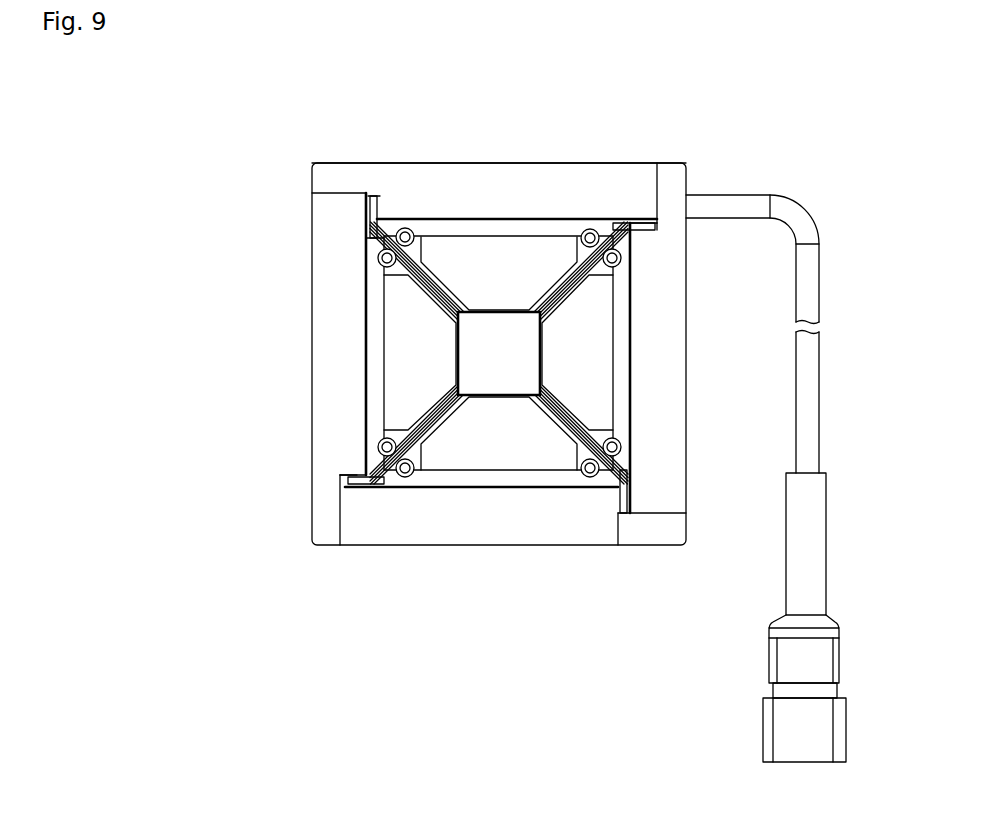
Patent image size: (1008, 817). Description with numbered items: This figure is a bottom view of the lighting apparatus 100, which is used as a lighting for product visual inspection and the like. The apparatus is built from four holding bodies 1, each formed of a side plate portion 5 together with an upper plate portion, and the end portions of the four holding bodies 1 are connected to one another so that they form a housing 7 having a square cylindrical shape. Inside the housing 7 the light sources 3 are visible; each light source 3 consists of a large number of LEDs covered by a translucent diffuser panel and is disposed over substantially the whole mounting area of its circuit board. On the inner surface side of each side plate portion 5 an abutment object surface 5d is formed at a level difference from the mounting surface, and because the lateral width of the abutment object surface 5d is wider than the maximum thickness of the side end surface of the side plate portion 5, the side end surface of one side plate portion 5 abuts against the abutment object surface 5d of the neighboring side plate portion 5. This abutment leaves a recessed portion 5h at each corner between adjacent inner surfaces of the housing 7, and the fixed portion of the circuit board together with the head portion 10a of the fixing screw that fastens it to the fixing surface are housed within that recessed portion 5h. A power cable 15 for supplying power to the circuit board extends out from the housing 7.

The lighting apparatus 100 is at (728, 138).
The holding body 1 is at (357, 163).
The light source 3 is at (552, 262).
The side plate portion 5 is at (510, 176).
The abutment object surface 5d is at (340, 196).
The recessed portion 5h is at (372, 196).
The housing 7 is at (335, 160).
The head portion 10a is at (388, 212).
The power cable 15 is at (820, 294).